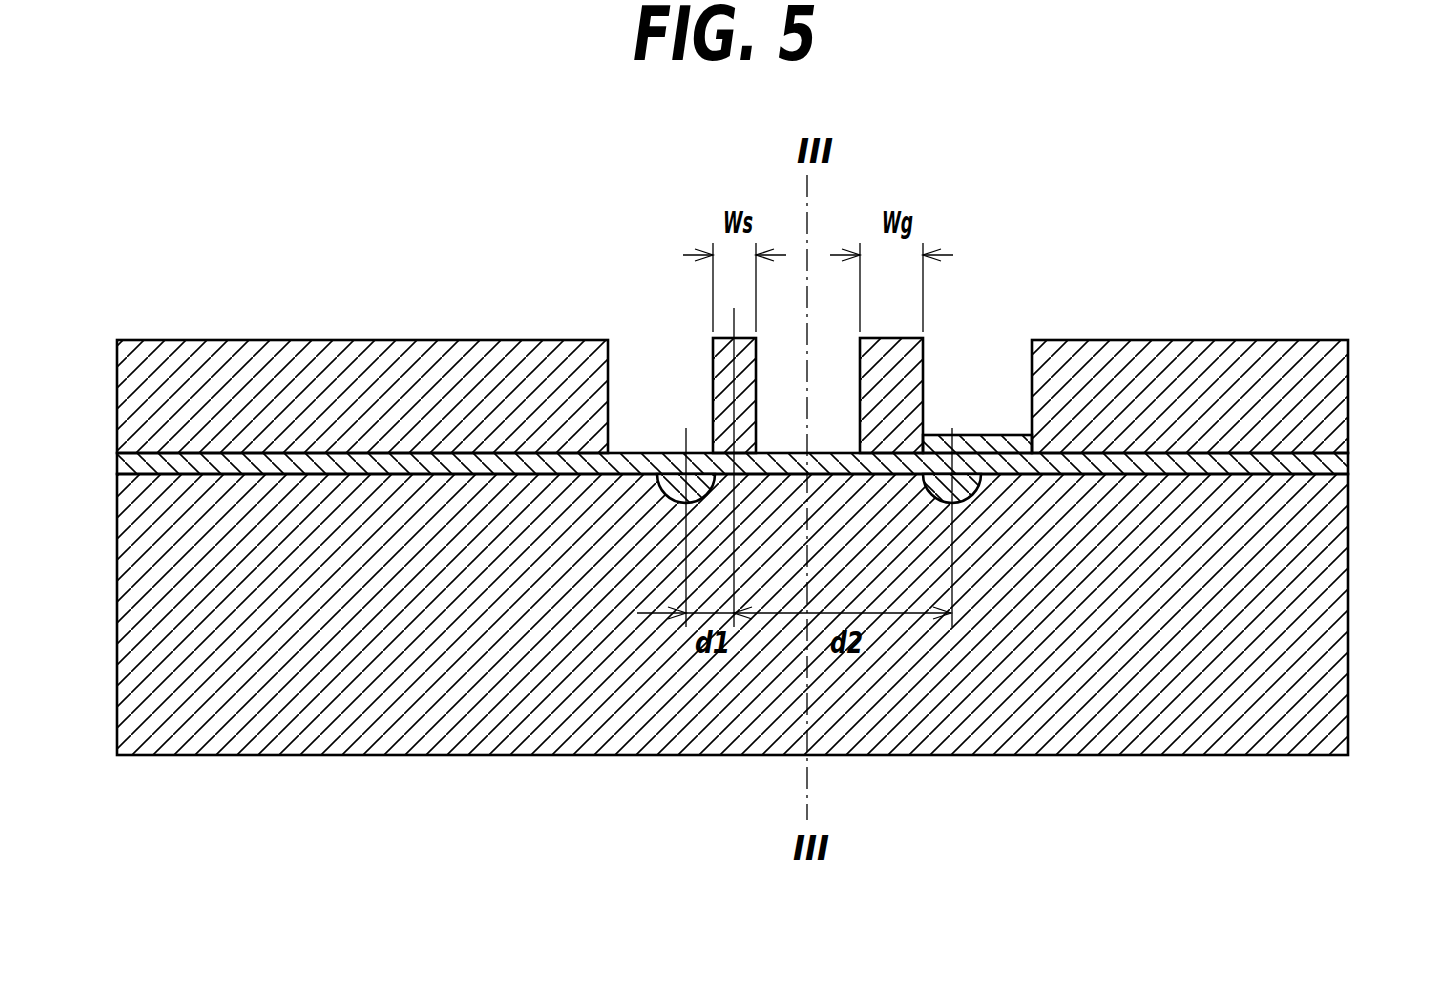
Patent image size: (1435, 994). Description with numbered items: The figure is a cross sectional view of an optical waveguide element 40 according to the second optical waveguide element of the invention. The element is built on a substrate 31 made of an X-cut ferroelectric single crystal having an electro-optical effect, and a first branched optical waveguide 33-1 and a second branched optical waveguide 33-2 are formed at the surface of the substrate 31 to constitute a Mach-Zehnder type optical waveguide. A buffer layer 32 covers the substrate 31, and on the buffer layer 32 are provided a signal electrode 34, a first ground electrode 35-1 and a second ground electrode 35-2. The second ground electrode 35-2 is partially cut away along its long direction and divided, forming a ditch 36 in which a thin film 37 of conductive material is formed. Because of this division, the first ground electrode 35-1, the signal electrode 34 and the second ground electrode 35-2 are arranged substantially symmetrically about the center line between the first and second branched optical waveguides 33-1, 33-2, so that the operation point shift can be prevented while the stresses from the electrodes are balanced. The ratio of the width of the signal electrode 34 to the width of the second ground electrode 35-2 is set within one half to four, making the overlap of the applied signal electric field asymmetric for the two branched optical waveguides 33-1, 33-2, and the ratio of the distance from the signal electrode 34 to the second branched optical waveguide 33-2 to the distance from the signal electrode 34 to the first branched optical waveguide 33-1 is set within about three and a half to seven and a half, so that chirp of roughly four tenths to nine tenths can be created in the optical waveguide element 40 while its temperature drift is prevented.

The substrate 31 is at (1317, 590).
The buffer layer 32 is at (1330, 463).
The first branched optical waveguide 33-1 is at (663, 507).
The second branched optical waveguide 33-2 is at (980, 500).
The signal electrode 34 is at (713, 377).
The first ground electrode 35-1 is at (395, 350).
The second ground electrode 35-2 is at (1163, 358).
The ditch 36 is at (952, 372).
The thin film 37 is at (973, 435).
The optical waveguide element 40 is at (775, 463).